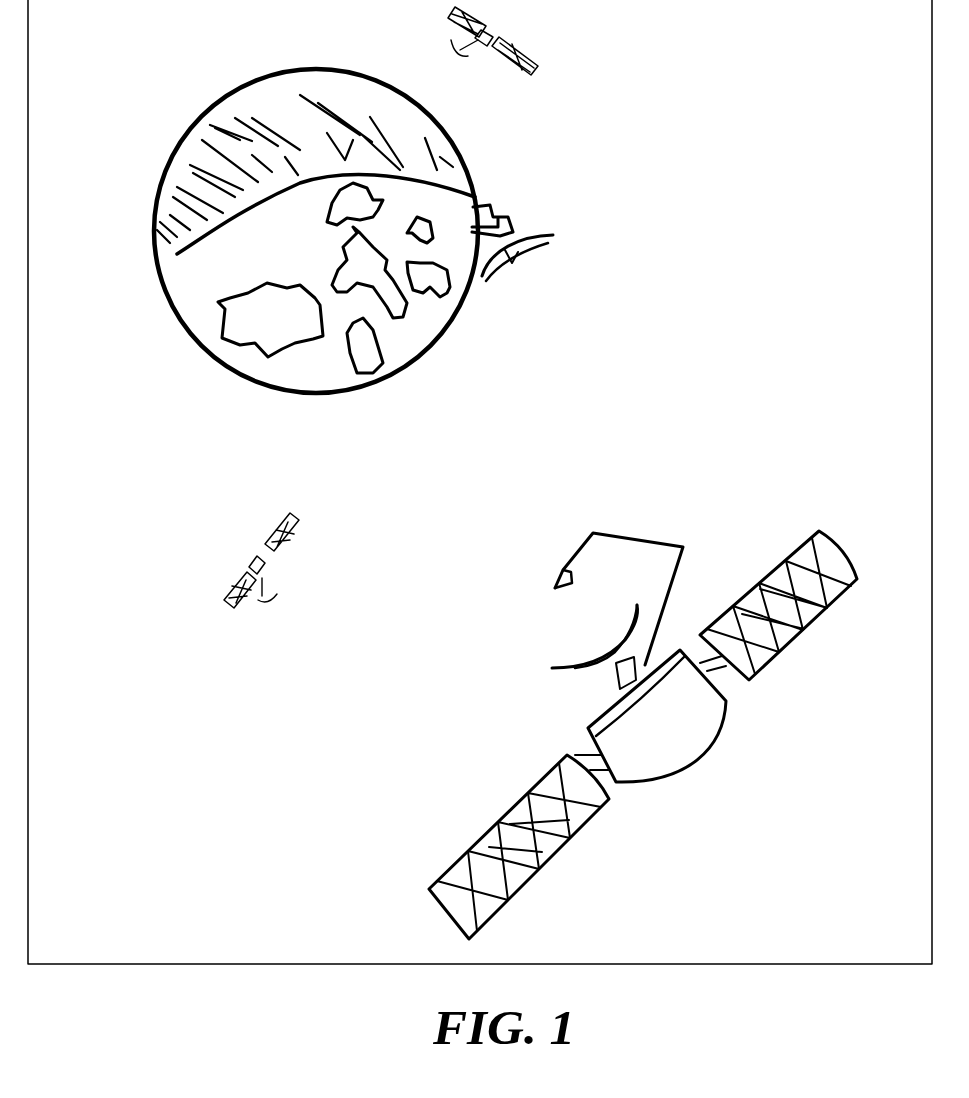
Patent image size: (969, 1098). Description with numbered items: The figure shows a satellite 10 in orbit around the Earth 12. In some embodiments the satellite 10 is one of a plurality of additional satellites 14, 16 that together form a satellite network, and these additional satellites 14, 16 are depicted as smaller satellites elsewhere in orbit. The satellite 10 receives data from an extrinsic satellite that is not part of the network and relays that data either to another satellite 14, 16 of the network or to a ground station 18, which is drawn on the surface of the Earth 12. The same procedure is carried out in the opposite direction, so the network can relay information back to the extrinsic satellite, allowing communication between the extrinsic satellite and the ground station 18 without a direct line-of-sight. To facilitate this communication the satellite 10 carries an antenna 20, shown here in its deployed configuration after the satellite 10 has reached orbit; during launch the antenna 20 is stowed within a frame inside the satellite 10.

The satellite 10 is at (767, 473).
The Earth 12 is at (282, 75).
The additional satellite 14 is at (512, 41).
The additional satellite 16 is at (247, 612).
The ground station 18 is at (512, 212).
The antenna 20 is at (546, 632).